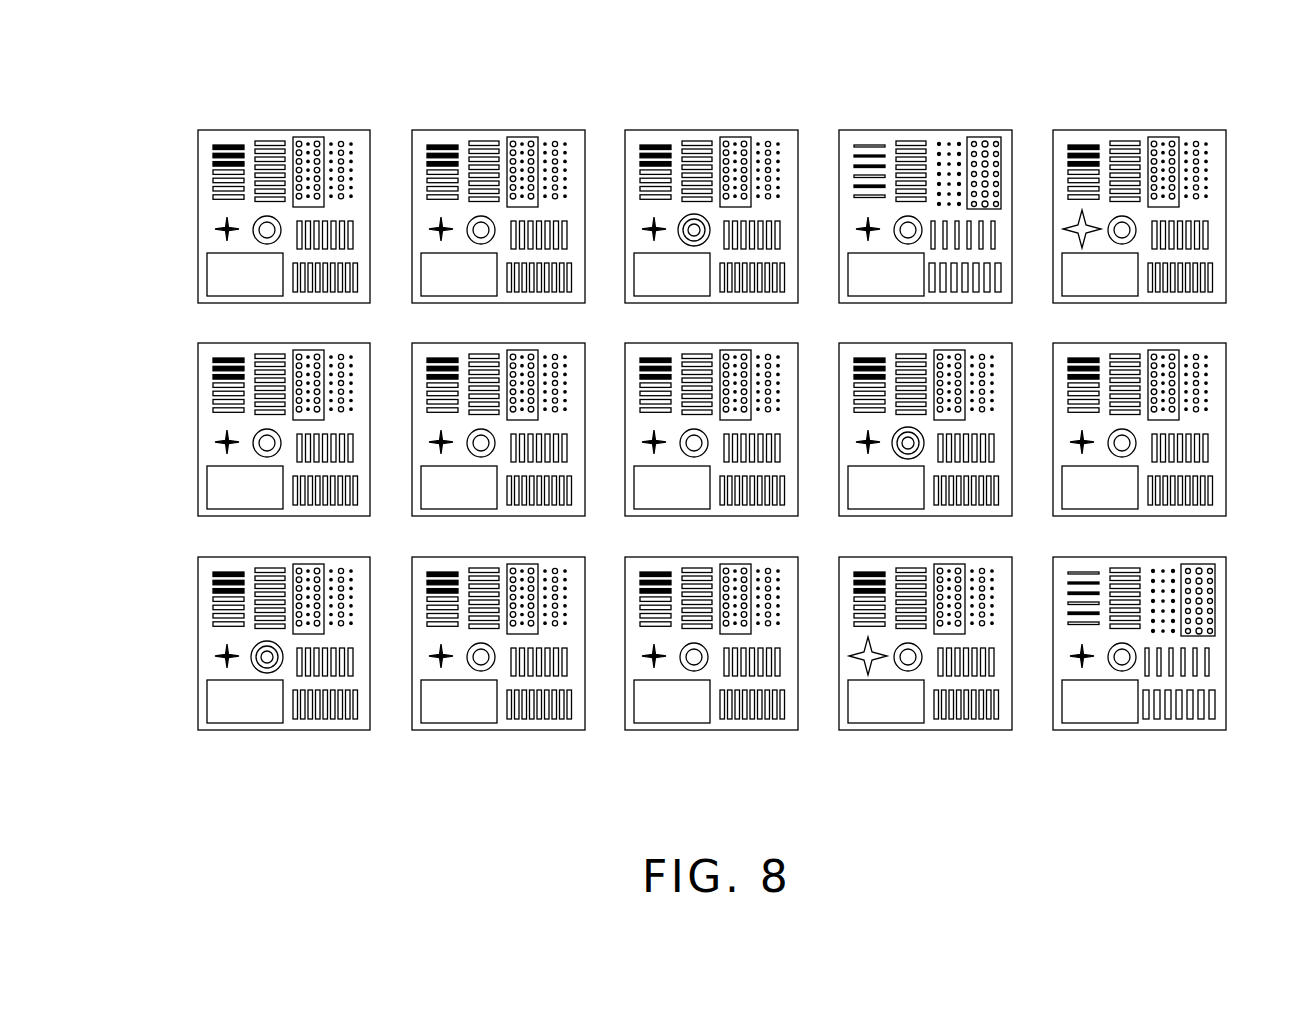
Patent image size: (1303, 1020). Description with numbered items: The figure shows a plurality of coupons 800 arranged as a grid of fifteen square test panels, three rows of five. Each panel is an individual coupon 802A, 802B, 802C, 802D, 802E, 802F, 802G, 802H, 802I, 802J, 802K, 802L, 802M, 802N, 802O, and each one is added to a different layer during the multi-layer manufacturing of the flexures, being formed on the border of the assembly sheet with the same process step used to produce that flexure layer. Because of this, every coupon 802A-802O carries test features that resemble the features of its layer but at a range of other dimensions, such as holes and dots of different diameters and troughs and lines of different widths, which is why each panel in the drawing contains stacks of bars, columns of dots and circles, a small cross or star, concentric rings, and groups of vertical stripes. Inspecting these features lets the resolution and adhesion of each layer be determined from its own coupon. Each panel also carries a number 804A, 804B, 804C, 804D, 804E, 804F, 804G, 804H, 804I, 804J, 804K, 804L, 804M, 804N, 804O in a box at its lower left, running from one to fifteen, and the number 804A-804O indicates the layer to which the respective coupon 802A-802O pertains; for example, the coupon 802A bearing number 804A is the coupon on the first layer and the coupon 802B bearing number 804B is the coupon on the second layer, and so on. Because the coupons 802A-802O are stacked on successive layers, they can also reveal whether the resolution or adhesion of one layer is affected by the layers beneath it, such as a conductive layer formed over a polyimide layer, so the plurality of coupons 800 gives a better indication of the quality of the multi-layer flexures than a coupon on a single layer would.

The plurality of coupons 800 is at (358, 53).
The coupon 802A is at (267, 130).
The coupon 802B is at (263, 343).
The coupon 802C is at (268, 557).
The coupon 802D is at (525, 130).
The coupon 802E is at (490, 343).
The coupon 802F is at (472, 558).
The coupon 802G is at (745, 130).
The coupon 802H is at (712, 343).
The coupon 802I is at (693, 558).
The coupon 802J is at (970, 130).
The coupon 802K is at (937, 343).
The coupon 802L is at (915, 558).
The coupon 802M is at (1195, 130).
The coupon 802N is at (1160, 343).
The coupon 802O is at (1137, 558).
The number 804A is at (217, 275).
The number 804B is at (215, 495).
The number 804C is at (220, 705).
The number 804D is at (457, 283).
The number 804E is at (457, 497).
The number 804F is at (457, 713).
The number 804G is at (680, 283).
The number 804H is at (680, 497).
The number 804I is at (680, 713).
The number 804J is at (903, 283).
The number 804K is at (903, 497).
The number 804L is at (903, 713).
The number 804M is at (1118, 283).
The number 804N is at (1118, 497).
The number 804O is at (1118, 713).